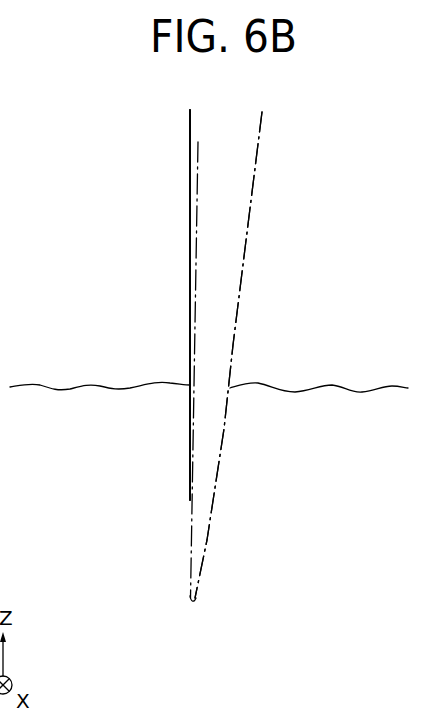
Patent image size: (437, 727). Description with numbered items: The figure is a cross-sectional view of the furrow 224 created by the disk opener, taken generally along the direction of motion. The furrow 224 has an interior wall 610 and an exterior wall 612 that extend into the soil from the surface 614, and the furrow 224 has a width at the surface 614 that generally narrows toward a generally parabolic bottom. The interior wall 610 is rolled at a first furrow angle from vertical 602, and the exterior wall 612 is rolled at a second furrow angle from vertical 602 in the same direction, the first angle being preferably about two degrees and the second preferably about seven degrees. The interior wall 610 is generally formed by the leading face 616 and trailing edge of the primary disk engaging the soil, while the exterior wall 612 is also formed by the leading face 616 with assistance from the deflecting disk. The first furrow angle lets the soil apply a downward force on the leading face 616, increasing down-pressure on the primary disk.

The furrow 224 is at (290, 311).
The vertical 602 is at (190, 226).
The interior wall 610 is at (190, 553).
The exterior wall 612 is at (213, 492).
The surface 614 is at (88, 385).
The leading face 616 is at (193, 603).